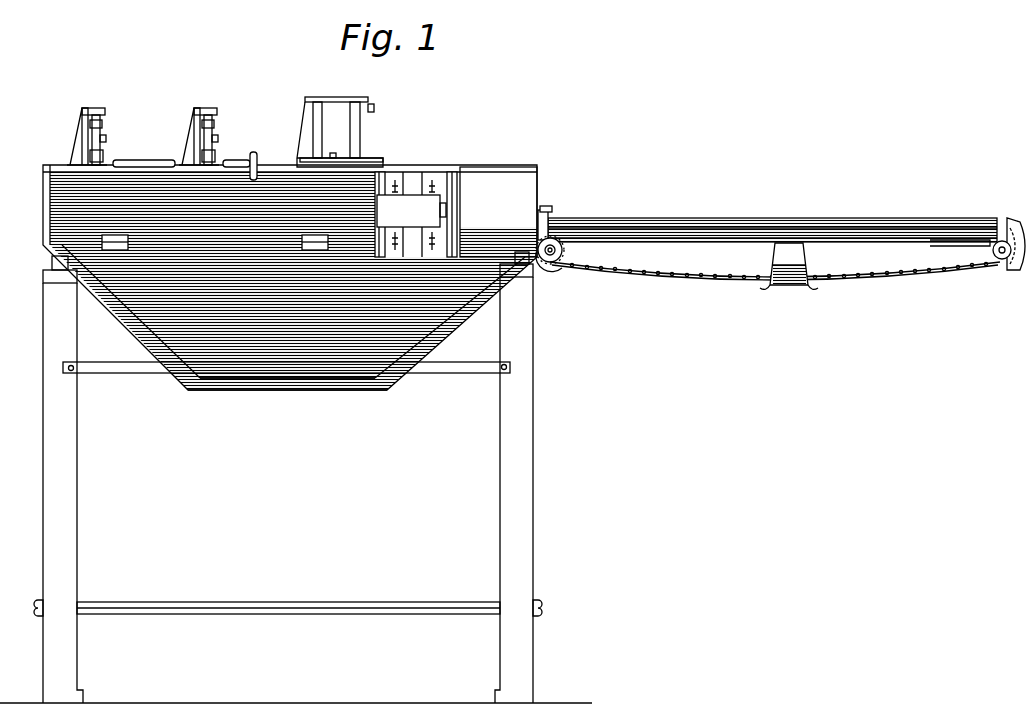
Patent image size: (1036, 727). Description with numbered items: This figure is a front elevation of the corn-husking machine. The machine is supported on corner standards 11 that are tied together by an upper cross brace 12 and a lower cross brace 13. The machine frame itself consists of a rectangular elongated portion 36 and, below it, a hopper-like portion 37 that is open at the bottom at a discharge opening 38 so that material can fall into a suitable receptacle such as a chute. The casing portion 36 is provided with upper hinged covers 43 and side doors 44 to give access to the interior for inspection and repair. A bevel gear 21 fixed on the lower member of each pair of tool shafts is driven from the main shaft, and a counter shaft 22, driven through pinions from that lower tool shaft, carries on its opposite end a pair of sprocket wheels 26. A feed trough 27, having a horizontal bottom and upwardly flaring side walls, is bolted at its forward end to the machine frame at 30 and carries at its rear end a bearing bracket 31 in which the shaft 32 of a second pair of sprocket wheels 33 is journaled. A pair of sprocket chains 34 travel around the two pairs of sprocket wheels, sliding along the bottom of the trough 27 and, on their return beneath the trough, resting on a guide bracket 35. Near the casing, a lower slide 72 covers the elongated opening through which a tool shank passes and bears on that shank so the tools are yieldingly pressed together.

The corner standards 11 is at (77, 467).
The upper cross brace 12 is at (458, 373).
The lower cross brace 13 is at (265, 602).
The bevel gear 21 is at (396, 178).
The counter shaft 22 is at (551, 263).
The sprocket wheels 26 is at (564, 256).
The feed trough 27 is at (656, 218).
The bolted connection of feed trough 30 is at (545, 212).
The bearing bracket 31 is at (965, 246).
The shaft 32 is at (998, 262).
The sprocket wheels 33 is at (980, 268).
The sprocket chains 34 is at (670, 276).
The guide bracket 35 is at (788, 282).
The rectangular elongated portion 36 is at (498, 212).
The hopper-like portion 37 is at (268, 352).
The discharge opening 38 is at (315, 390).
The hinged covers 43 is at (160, 148).
The side doors 44 is at (334, 219).
The lower slide 72 is at (434, 178).